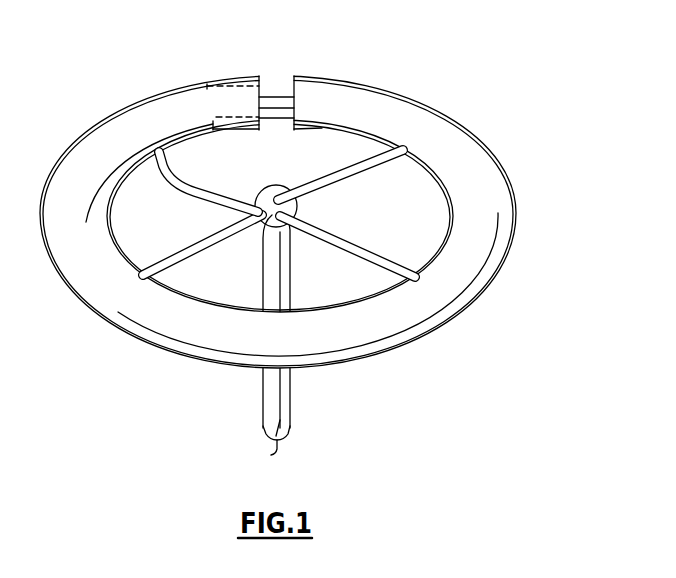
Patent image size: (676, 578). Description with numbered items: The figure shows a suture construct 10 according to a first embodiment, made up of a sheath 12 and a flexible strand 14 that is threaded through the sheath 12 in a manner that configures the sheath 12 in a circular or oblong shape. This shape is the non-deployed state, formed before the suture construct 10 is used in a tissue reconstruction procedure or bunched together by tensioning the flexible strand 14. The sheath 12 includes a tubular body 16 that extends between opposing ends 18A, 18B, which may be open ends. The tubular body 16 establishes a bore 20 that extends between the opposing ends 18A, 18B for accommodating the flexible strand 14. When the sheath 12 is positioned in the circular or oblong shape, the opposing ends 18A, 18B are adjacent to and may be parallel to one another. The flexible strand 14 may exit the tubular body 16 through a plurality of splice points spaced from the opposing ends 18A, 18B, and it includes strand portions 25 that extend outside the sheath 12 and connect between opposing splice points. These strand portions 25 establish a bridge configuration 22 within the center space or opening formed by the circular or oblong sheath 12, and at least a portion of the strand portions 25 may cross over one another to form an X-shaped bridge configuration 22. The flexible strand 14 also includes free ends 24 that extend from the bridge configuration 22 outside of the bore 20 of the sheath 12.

The suture construct 10 is at (300, 246).
The sheath 12 is at (494, 262).
The flexible strand 14 is at (281, 96).
The tubular body 16 is at (468, 146).
The opposing end 18A is at (263, 86).
The opposing end 18B is at (296, 74).
The bore 20 is at (237, 90).
The bridge configuration 22 is at (247, 190).
The free ends 24 is at (273, 442).
The strand portions 25 is at (352, 243).